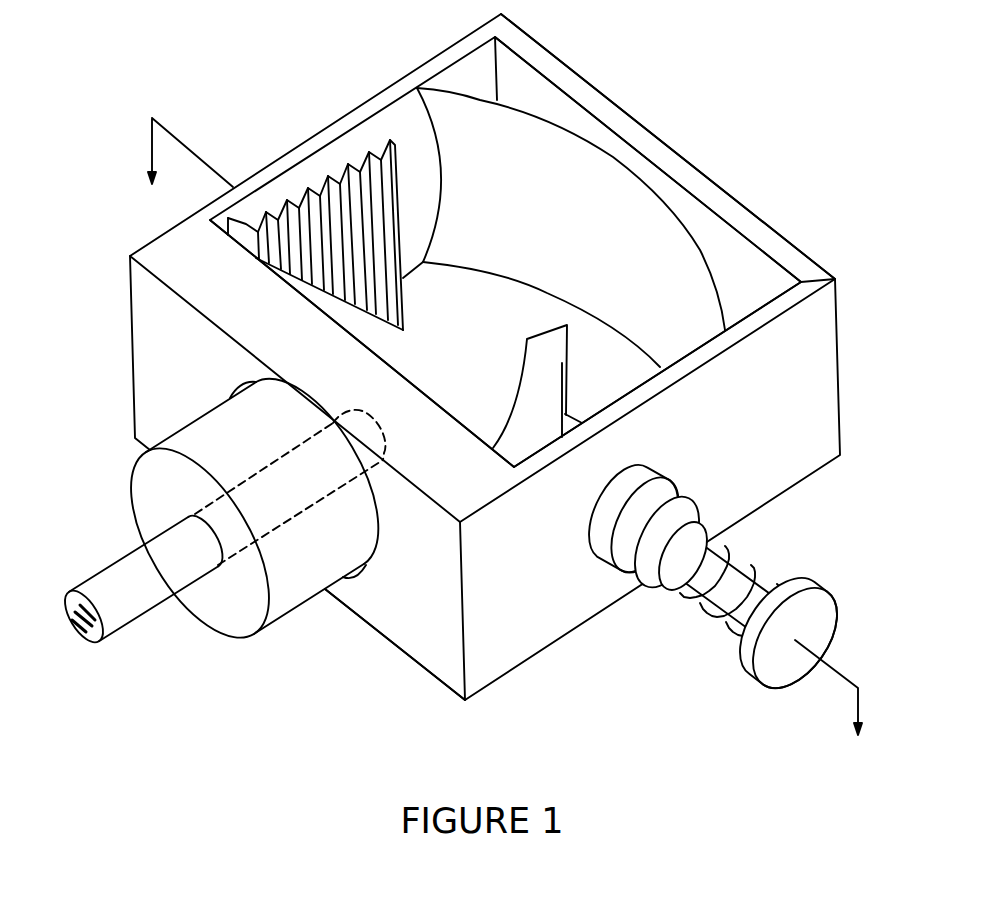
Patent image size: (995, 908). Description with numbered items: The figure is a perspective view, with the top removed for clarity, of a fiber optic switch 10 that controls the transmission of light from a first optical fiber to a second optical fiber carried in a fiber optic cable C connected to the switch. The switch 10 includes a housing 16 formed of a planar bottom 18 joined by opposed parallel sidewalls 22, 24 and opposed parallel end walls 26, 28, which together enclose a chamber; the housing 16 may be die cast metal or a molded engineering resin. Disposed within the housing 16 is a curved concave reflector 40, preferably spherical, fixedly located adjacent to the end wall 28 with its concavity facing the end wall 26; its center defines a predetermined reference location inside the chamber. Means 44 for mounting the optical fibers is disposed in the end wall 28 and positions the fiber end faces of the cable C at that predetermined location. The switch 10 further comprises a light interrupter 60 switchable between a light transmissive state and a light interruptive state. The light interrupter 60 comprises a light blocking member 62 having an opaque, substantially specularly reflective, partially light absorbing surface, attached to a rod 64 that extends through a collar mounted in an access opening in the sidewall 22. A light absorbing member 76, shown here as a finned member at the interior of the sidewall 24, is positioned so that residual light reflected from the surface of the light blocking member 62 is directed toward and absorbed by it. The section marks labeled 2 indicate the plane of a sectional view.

The fiber optic switch 10 is at (668, 74).
The housing 16 is at (128, 255).
The planar bottom 18 is at (450, 358).
The sidewall 22 is at (710, 420).
The sidewall 24 is at (247, 182).
The end wall 26 is at (416, 634).
The end wall 28 is at (742, 192).
The curved concave reflector 40 is at (700, 250).
The means for mounting at least a first optical fiber 44 is at (223, 664).
The light interrupter 60 is at (721, 584).
The light blocking member 62 is at (568, 347).
The rod 64 is at (740, 646).
The light absorbing member 76 is at (378, 128).
The fiber optic cable C is at (122, 562).
The section line 2- 2 is at (503, 443).